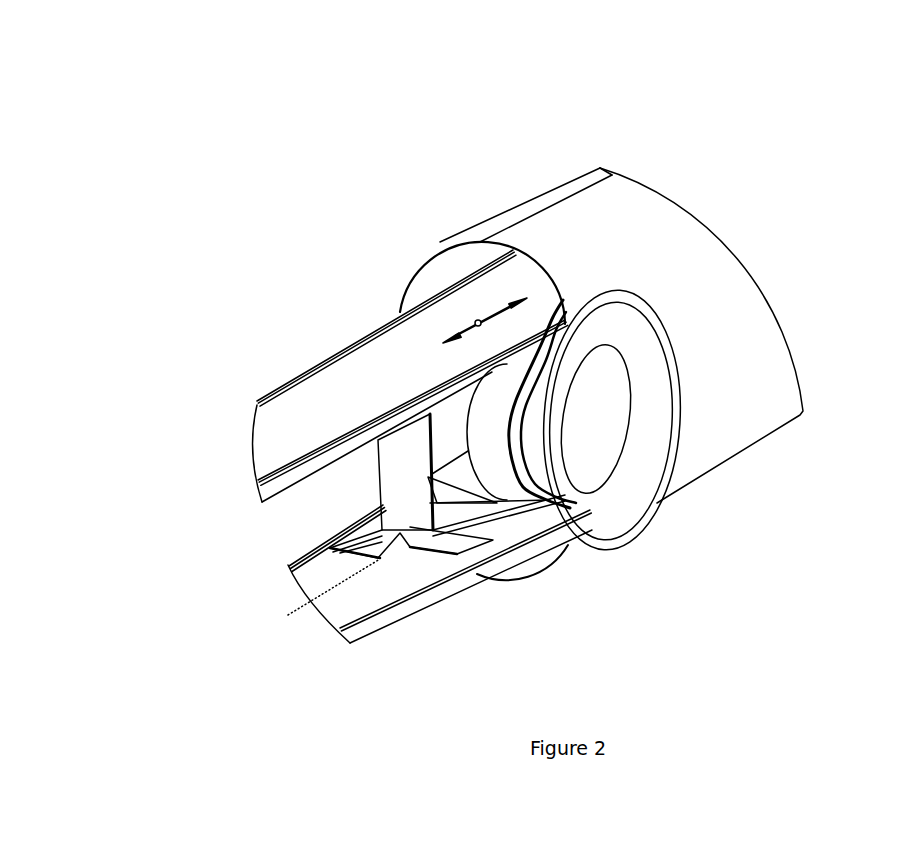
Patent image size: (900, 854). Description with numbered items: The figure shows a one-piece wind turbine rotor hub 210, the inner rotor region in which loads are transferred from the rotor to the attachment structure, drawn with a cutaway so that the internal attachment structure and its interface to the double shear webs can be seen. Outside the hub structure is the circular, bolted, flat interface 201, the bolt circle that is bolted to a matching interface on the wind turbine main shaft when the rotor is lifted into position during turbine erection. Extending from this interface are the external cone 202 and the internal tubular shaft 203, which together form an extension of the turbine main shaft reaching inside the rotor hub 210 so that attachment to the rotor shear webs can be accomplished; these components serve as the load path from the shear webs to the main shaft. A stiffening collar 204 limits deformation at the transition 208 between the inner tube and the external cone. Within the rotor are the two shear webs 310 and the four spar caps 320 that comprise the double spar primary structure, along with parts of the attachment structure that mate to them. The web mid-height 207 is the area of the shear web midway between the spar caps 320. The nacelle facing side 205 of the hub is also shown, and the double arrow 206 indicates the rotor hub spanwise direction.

The interface 201 is at (580, 533).
The external cone 202 is at (638, 493).
The internal tubular shaft 203 is at (487, 452).
The stiffening collar 204 is at (533, 388).
The nacelle facing side 205 is at (731, 424).
The double arrow 206 is at (475, 322).
The web mid-height 207 is at (319, 601).
The transition 208 is at (622, 333).
The rotor hub 210 is at (433, 160).
The shear webs 310 is at (292, 423).
The spar caps 320 is at (257, 405).